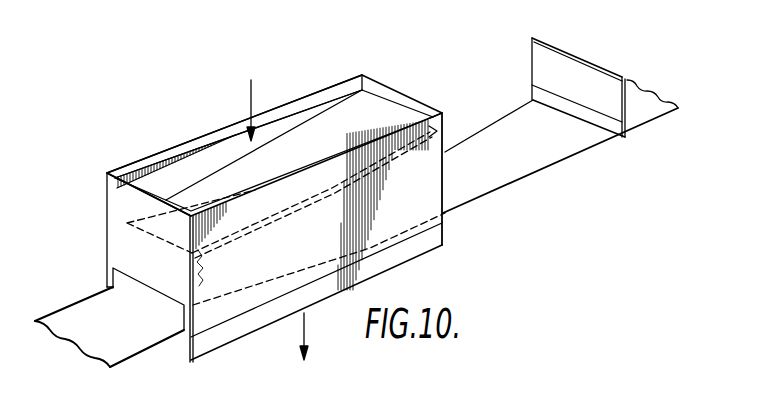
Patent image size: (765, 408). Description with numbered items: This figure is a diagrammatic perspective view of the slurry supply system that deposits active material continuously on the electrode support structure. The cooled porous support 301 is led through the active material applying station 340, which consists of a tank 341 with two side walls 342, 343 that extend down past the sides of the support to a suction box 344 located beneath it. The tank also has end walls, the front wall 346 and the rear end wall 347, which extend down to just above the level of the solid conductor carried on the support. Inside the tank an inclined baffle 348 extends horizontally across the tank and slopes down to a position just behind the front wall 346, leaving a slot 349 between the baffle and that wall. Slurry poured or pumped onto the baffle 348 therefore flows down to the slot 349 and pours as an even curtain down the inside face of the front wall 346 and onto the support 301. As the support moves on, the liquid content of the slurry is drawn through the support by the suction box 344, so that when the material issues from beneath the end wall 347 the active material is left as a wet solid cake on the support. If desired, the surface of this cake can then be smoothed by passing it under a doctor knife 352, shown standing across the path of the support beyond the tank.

The porous support 301 is at (137, 346).
The active material applying station 340 is at (353, 73).
The tank 341 is at (215, 136).
The side wall 342 is at (153, 158).
The side wall 343 is at (183, 330).
The suction box 344 is at (428, 241).
The front wall 346 is at (106, 207).
The end wall 347 is at (446, 157).
The inclined baffle 348 is at (335, 106).
The slot 349 is at (178, 303).
The doctor knife 352 is at (567, 68).